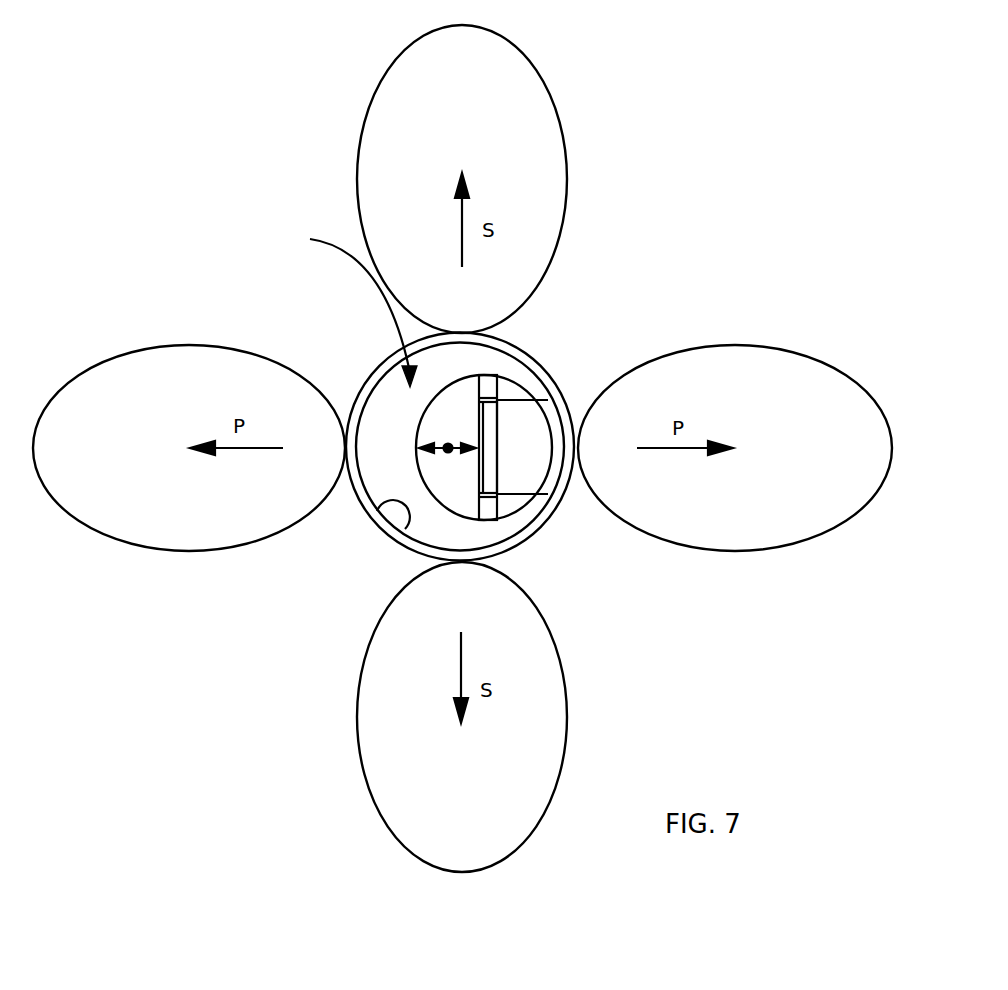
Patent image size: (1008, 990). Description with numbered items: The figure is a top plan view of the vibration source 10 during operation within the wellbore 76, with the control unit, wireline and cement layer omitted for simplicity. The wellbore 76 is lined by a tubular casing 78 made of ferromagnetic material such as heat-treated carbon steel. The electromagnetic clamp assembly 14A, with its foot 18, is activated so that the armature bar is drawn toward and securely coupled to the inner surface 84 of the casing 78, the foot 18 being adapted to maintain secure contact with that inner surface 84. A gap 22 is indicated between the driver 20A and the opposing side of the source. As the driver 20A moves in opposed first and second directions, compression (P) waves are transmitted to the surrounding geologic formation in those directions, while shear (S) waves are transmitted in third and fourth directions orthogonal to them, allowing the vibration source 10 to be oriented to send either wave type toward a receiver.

The vibration source 10 is at (501, 350).
The clamp assembly 14A is at (543, 461).
The foot 18 is at (552, 415).
The driver 20A is at (523, 356).
The gap 22 is at (465, 421).
The wellbore 76 is at (349, 308).
The casing 78 is at (382, 363).
The inner surface 84 is at (373, 513).